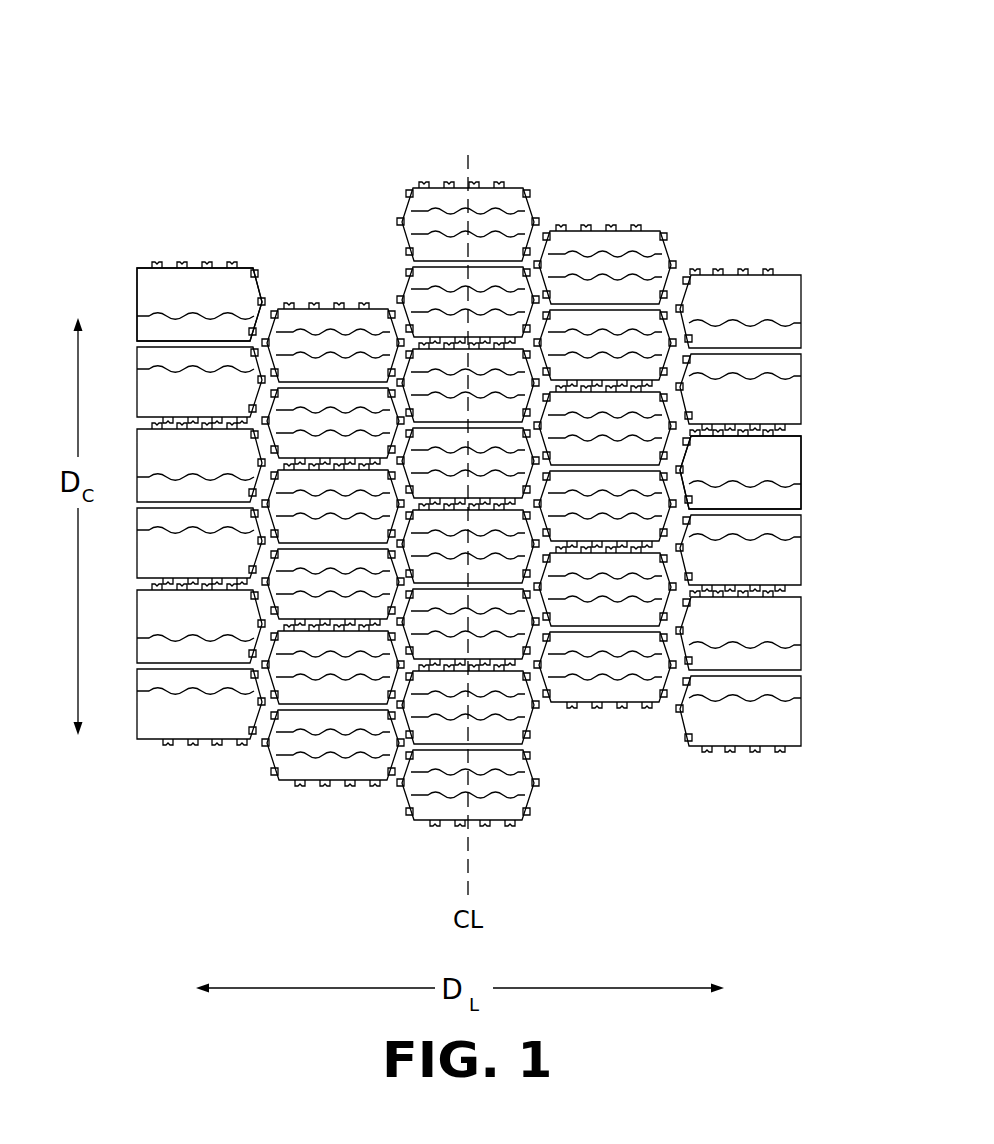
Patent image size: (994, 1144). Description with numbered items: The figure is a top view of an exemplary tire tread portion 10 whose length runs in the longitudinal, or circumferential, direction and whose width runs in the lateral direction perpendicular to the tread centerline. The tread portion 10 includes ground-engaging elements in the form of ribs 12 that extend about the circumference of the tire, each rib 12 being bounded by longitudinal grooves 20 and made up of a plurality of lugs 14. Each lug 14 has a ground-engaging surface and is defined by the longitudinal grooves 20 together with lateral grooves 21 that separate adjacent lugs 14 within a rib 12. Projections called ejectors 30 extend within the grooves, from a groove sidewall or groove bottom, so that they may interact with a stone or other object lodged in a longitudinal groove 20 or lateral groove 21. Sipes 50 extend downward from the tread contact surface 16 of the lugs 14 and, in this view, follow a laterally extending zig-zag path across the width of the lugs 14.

The tire tread portion 10 is at (812, 110).
The rib 12 is at (193, 140).
The lug 14 is at (444, 186).
The tread contact surface 16 is at (211, 302).
The longitudinal groove 20 is at (262, 852).
The lateral groove 21 is at (126, 344).
The ejector 30 is at (185, 264).
The sipe 50 is at (498, 212).